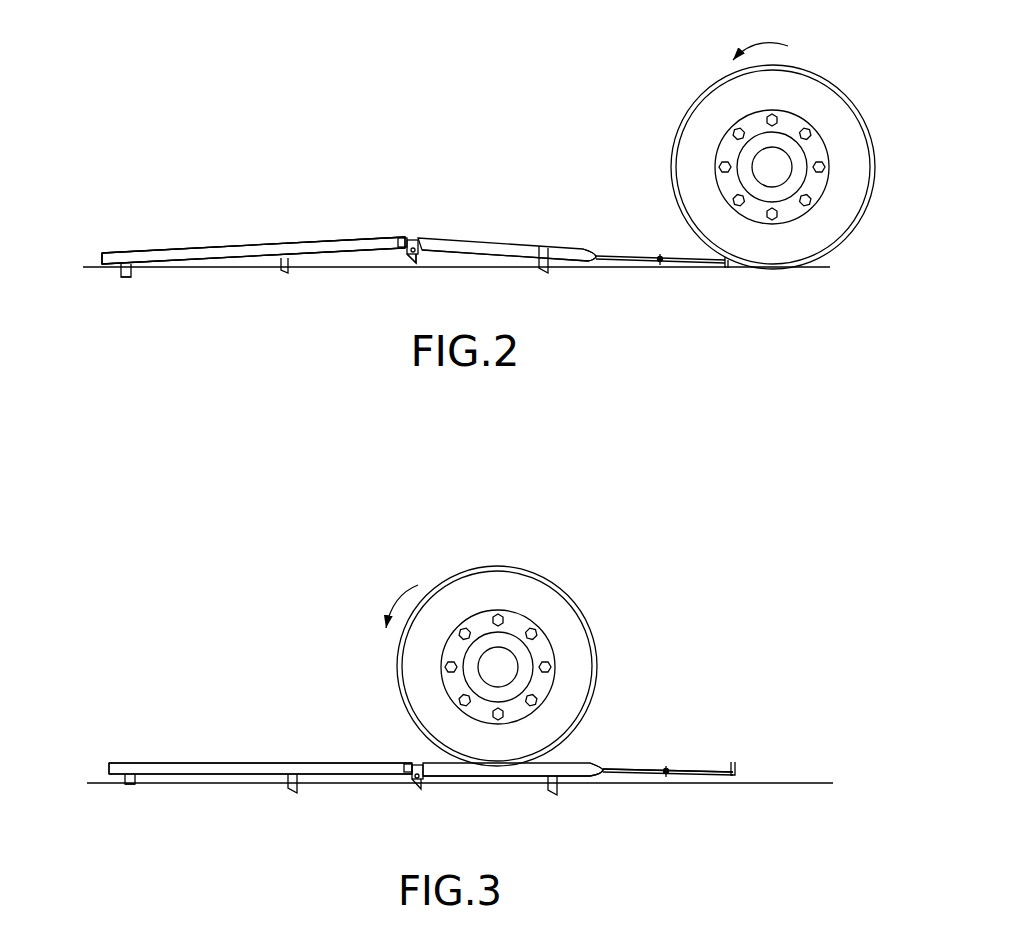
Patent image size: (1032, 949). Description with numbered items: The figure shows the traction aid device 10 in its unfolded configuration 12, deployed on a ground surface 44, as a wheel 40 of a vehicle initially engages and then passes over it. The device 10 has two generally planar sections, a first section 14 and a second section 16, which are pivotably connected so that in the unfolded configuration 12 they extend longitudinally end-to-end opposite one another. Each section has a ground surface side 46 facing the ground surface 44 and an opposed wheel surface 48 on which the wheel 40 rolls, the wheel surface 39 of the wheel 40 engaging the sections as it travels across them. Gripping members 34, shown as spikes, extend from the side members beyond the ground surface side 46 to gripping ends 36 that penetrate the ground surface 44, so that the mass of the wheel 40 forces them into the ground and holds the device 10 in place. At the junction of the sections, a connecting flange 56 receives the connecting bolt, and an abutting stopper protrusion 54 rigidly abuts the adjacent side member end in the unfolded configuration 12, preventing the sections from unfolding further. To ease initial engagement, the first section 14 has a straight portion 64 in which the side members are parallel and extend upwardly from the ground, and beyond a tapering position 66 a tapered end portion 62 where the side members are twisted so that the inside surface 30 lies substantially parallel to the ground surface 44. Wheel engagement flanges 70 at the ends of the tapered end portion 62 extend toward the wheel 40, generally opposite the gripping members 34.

In FIG. 2, the traction aid device 10 is at (295, 110).
In FIG. 2, the unfolded configuration 12 is at (393, 278).
In FIG. 3, the unfolded configuration 12 is at (405, 790).
In FIG. 2, the first section 14 is at (742, 272).
In FIG. 3, the first section 14 is at (748, 765).
In FIG. 2, the second section 16 is at (205, 225).
In FIG. 3, the second section 16 is at (210, 752).
In FIG. 3, the inside surface 30 is at (703, 740).
In FIG. 2, the gripping member 34 is at (132, 271).
In FIG. 3, the gripping member 34 is at (135, 786).
In FIG. 2, the gripping end 36 is at (131, 277).
In FIG. 3, the gripping end 36 is at (133, 790).
In FIG. 2, the wheel surface 39 is at (668, 140).
In FIG. 3, the wheel surface 39 is at (498, 667).
In FIG. 2, the wheel 40 is at (818, 92).
In FIG. 3, the wheel 40 is at (491, 666).
In FIG. 2, the ground surface 44 is at (92, 265).
In FIG. 3, the ground surface 44 is at (93, 780).
In FIG. 2, the ground surface side 46 is at (327, 258).
In FIG. 3, the ground surface side 46 is at (242, 778).
In FIG. 2, the wheel surface 48 is at (483, 243).
In FIG. 3, the wheel surface 48 is at (280, 764).
In FIG. 2, the abutting stopper protrusion 54 is at (402, 240).
In FIG. 3, the abutting stopper protrusion 54 is at (408, 768).
In FIG. 2, the connecting flange 56 is at (432, 252).
In FIG. 2, the tapered end portion 62 is at (652, 250).
In FIG. 3, the tapered end portion 62 is at (670, 745).
In FIG. 2, the straight portion 64 is at (497, 265).
In FIG. 3, the straight portion 64 is at (500, 782).
In FIG. 2, the tapering position 66 is at (592, 262).
In FIG. 3, the tapering position 66 is at (603, 778).
In FIG. 2, the wheel engagement flange 70 is at (688, 252).
In FIG. 3, the wheel engagement flange 70 is at (731, 764).